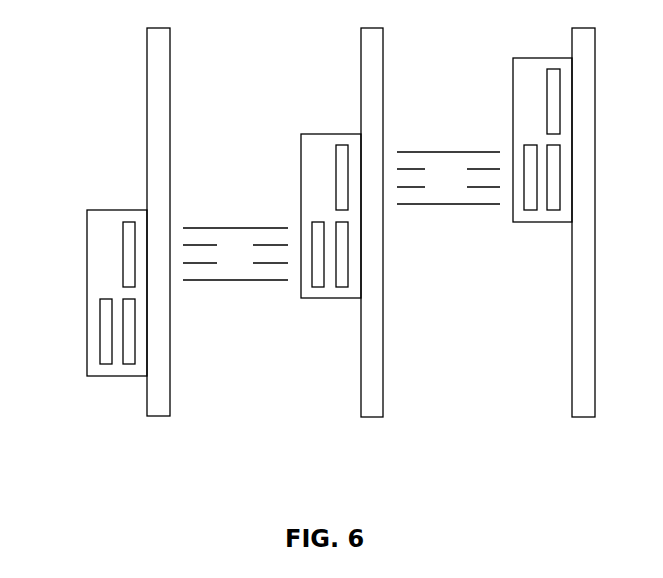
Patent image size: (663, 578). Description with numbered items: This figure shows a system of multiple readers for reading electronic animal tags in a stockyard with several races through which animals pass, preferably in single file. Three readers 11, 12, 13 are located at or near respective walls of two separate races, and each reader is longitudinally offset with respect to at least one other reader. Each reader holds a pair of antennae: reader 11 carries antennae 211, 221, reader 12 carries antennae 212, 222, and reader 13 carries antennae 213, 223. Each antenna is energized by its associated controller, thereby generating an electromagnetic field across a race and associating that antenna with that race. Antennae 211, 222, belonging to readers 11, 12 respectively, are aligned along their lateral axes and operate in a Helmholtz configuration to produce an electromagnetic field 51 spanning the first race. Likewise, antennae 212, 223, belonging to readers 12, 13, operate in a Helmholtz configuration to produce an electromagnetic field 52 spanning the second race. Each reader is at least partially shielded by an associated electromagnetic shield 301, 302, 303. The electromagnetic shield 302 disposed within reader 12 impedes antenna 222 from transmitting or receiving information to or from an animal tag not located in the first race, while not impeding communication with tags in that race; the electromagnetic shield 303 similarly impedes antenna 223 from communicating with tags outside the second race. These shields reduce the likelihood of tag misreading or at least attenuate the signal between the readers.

The reader 11 is at (90, 210).
The reader 12 is at (304, 134).
The reader 13 is at (516, 58).
The antenna 211 is at (128, 222).
The antenna 212 is at (342, 145).
The antenna 213 is at (553, 69).
The antenna 221 is at (105, 364).
The antenna 222 is at (318, 287).
The antenna 223 is at (530, 210).
The electromagnetic shield 301 is at (129, 364).
The electromagnetic shield 302 is at (342, 287).
The electromagnetic shield 303 is at (553, 210).
The electromagnetic field 51 is at (235, 254).
The electromagnetic field 52 is at (448, 178).